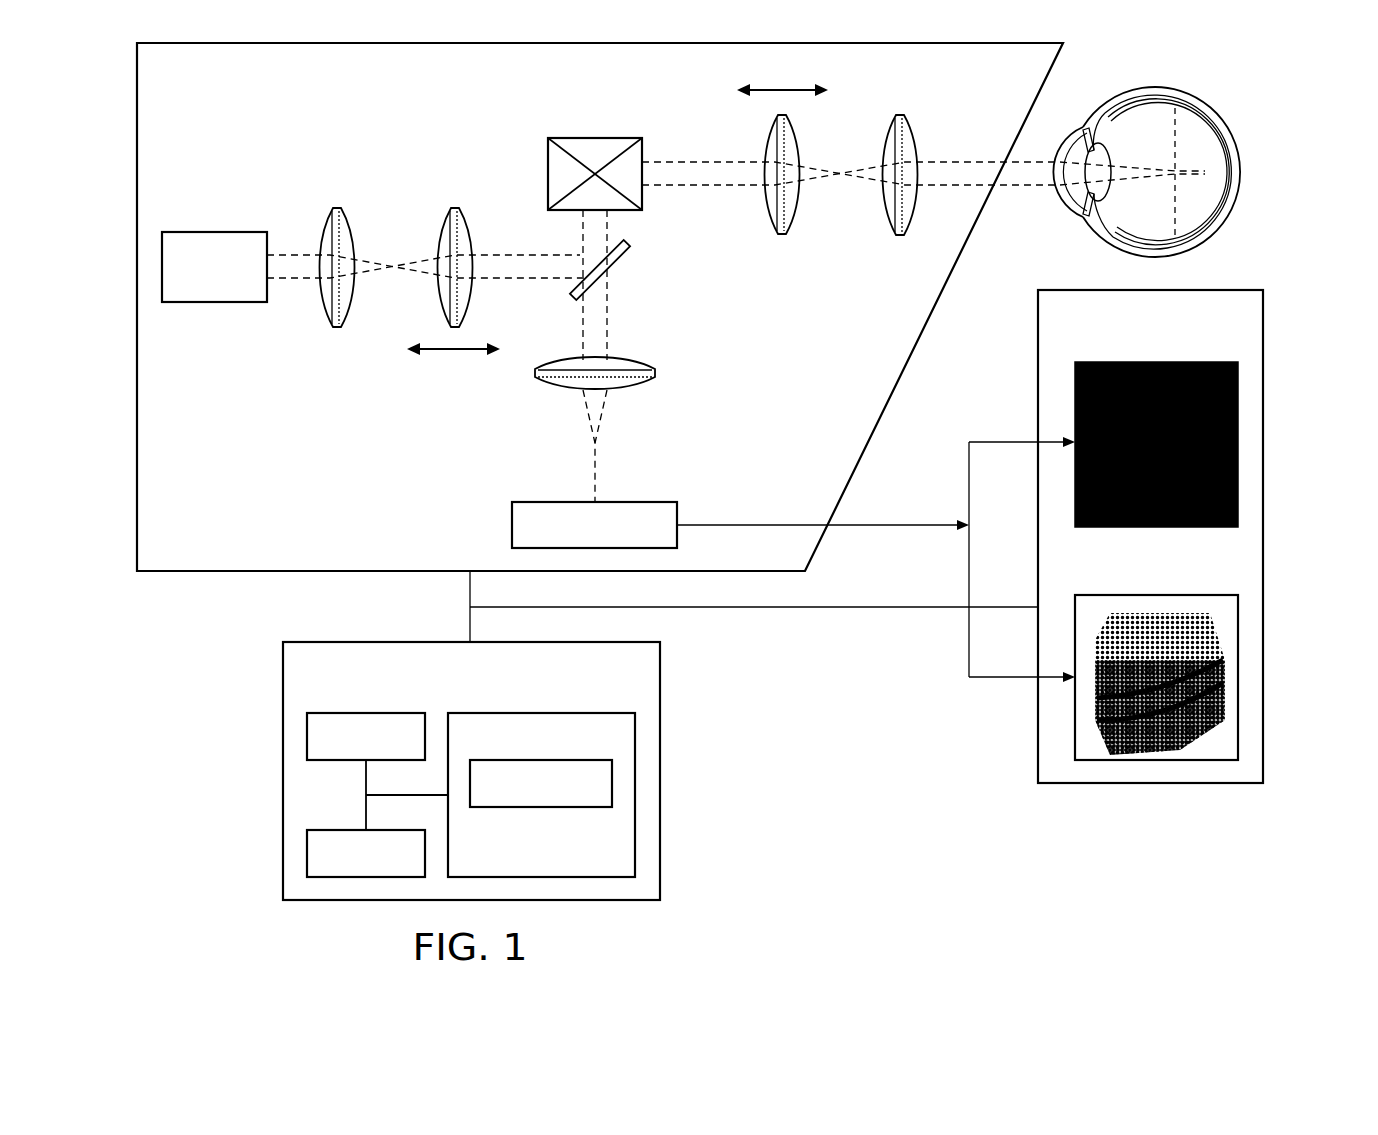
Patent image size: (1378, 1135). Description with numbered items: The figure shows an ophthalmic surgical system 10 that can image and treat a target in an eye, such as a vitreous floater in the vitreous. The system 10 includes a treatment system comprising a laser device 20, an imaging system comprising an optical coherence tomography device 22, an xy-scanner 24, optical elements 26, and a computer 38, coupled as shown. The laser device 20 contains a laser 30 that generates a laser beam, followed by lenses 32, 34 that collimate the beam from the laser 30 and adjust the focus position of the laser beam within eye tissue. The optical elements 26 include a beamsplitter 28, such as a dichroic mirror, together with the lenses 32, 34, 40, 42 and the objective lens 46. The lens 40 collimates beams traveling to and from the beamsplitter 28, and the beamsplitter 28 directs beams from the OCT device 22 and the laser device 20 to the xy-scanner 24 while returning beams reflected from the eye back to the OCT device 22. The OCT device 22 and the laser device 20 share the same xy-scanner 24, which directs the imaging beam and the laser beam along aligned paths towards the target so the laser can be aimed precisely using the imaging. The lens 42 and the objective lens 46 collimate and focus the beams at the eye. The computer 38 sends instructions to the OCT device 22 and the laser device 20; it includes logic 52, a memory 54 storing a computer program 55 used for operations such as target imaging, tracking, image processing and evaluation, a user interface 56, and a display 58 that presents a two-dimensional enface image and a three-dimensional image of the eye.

The ophthalmic surgical system 10 is at (130, 160).
The laser device 20 is at (280, 175).
The optical coherence tomography (OCT) device 22 is at (553, 502).
The xy-scanner 24 is at (548, 173).
The optical elements 26 is at (812, 324).
The beamsplitter 28 is at (627, 255).
The laser 30 is at (213, 302).
The lens 32 is at (337, 327).
The lens 34 is at (440, 220).
The computer 38 is at (668, 772).
The lens 40 is at (638, 390).
The lens 42 is at (797, 220).
The objective lens 46 is at (915, 140).
The logic 52 is at (355, 712).
The memory 54 is at (565, 712).
The computer program 55 is at (542, 807).
The user interface 56 is at (342, 830).
The display 58 is at (1272, 512).